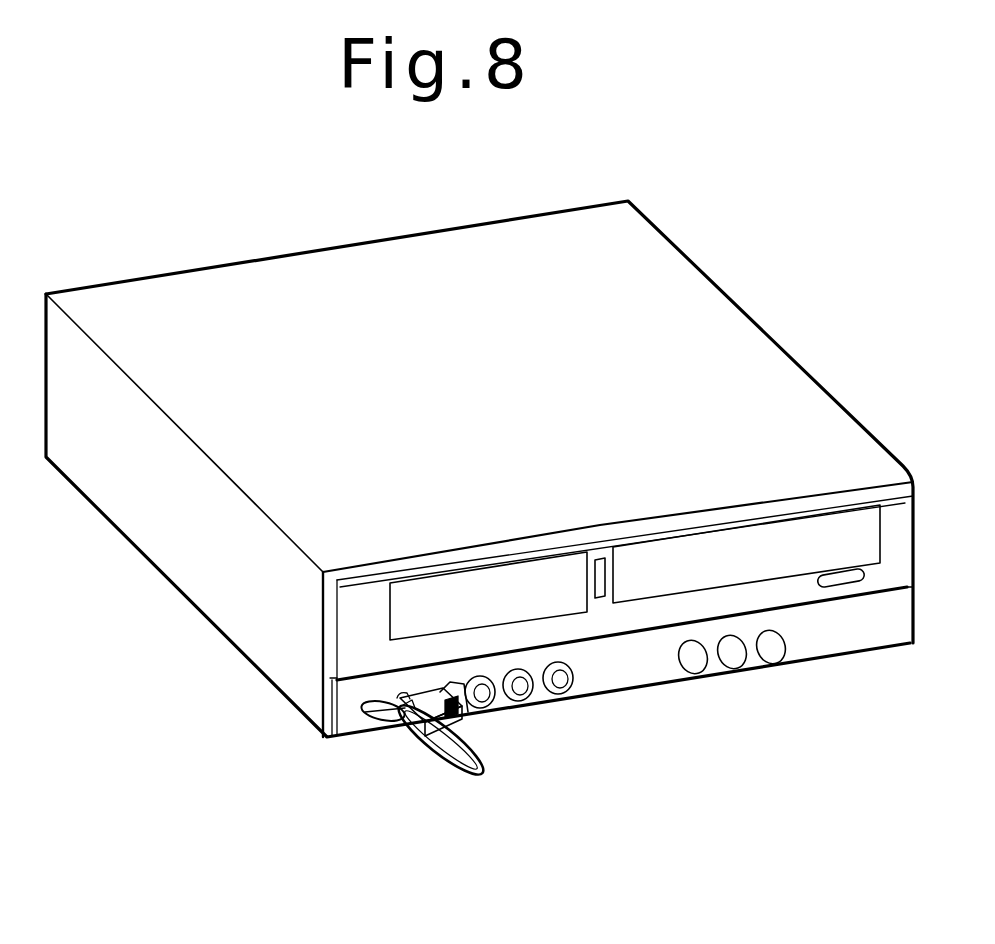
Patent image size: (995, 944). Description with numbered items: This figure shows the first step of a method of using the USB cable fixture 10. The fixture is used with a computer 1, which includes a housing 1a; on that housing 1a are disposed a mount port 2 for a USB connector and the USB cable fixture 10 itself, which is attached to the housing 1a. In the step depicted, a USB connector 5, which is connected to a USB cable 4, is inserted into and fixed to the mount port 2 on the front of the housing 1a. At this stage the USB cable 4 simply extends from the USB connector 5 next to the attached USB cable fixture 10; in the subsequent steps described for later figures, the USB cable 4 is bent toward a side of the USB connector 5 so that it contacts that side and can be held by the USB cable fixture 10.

The computer 1 is at (712, 333).
The housing 1a is at (650, 668).
The mount port 2 is at (480, 702).
The USB cable 4 is at (483, 767).
The USB connector 5 is at (457, 723).
The USB cable fixture 10 is at (378, 718).